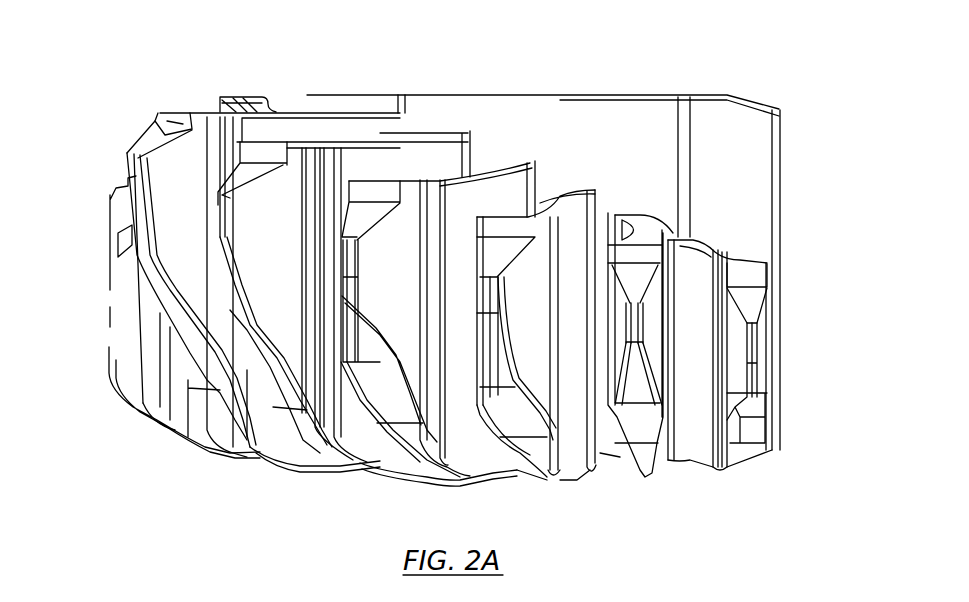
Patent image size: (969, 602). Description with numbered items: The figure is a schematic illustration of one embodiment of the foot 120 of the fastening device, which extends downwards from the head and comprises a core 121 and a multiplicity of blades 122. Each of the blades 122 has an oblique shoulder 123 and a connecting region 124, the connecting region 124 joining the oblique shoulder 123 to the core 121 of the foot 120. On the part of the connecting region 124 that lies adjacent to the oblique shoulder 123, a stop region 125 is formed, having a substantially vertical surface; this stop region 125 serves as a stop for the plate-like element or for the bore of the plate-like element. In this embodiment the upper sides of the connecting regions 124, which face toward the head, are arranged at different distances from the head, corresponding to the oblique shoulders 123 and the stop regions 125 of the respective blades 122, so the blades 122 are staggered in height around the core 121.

The foot 120 is at (607, 502).
The core 121 is at (563, 98).
The blades 122 is at (185, 237).
The oblique shoulder 123 is at (140, 140).
The connecting region 124 is at (217, 109).
The stop region 125 is at (160, 112).